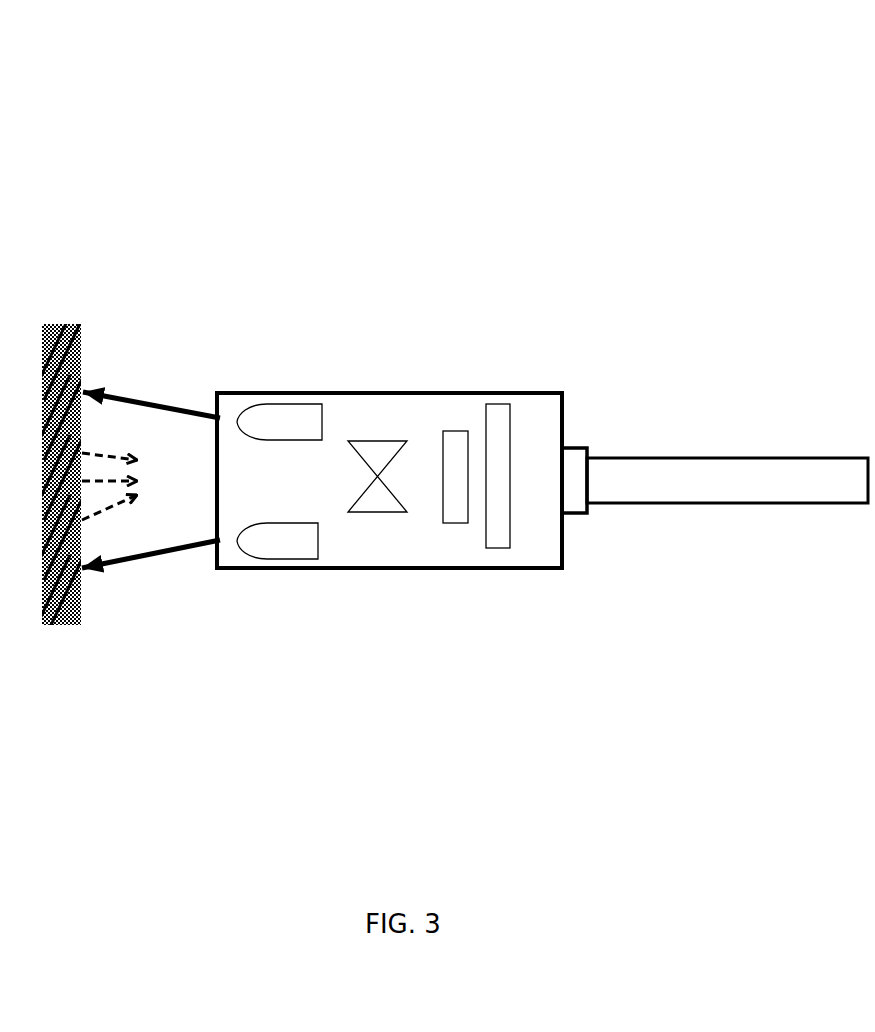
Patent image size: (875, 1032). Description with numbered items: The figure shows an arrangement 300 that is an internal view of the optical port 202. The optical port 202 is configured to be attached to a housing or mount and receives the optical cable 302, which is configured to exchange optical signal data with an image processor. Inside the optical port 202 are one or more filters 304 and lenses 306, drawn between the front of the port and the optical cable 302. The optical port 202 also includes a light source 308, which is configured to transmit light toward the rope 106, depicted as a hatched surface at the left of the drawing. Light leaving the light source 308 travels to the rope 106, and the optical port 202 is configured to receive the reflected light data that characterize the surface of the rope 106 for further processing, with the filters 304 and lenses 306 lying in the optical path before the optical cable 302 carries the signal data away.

The arrangement 300 is at (421, 41).
The rope 106 is at (80, 322).
The optical port 202 is at (368, 569).
The optical cable 302 is at (626, 492).
The filters 304 is at (512, 478).
The lenses 306 is at (378, 440).
The light source 308 is at (282, 402).